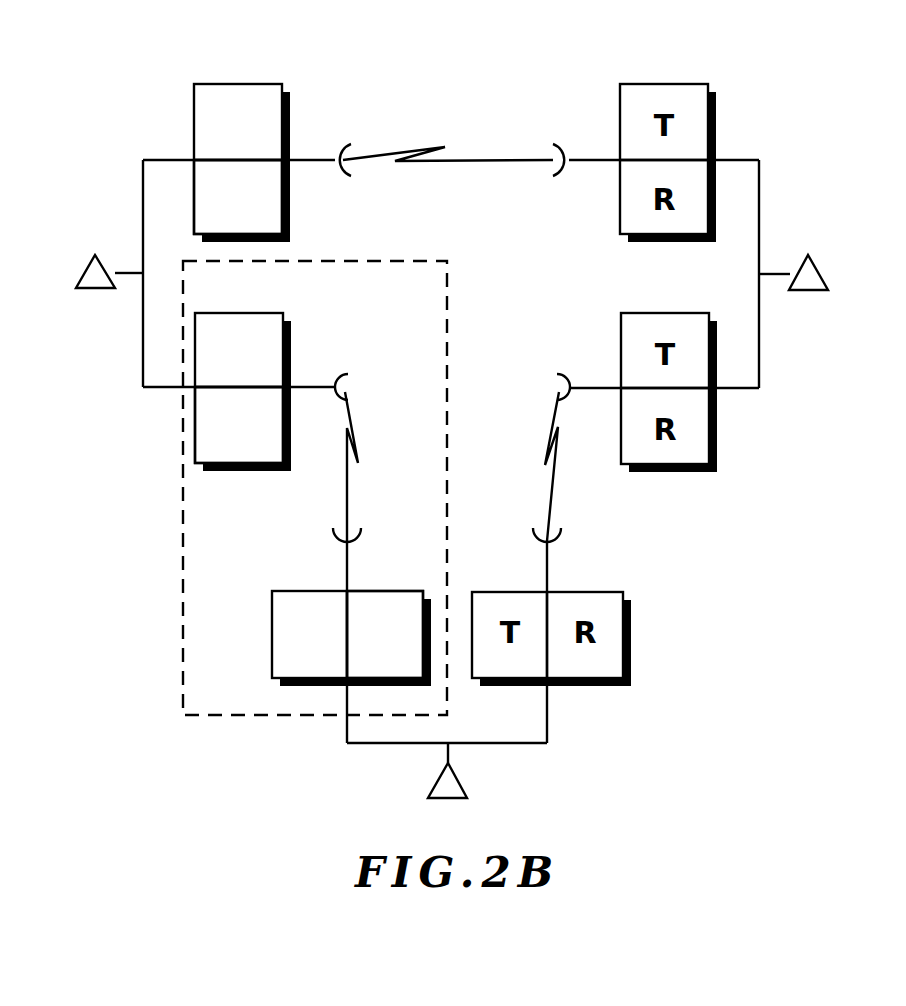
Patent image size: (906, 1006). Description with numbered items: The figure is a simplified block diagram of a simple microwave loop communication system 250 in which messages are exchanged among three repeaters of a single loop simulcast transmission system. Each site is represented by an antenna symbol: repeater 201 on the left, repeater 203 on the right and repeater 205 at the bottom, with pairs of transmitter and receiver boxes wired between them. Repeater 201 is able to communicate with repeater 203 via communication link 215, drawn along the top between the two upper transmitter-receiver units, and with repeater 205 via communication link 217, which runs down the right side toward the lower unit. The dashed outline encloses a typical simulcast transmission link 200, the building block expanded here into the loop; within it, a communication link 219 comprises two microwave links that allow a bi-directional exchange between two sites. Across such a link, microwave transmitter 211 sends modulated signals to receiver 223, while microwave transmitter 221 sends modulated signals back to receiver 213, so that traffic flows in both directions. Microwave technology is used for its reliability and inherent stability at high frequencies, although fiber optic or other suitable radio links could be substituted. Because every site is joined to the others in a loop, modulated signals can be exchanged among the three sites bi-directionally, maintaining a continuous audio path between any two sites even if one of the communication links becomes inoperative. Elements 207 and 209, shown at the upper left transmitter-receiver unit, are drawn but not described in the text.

The microwave loop communication system 250 is at (503, 47).
The simulcast transmission link 200 is at (183, 592).
The repeater 201 is at (100, 268).
The repeater 203 is at (810, 263).
The repeater 205 is at (453, 767).
The transmitter 207 is at (218, 84).
The receiver 209 is at (286, 183).
The microwave transmitter 211 is at (205, 310).
The receiver 213 is at (288, 432).
The communication link 215 is at (505, 158).
The communication link 217 is at (557, 445).
The communication link 219 is at (347, 508).
The microwave transmitter 221 is at (272, 649).
The receiver 223 is at (363, 592).